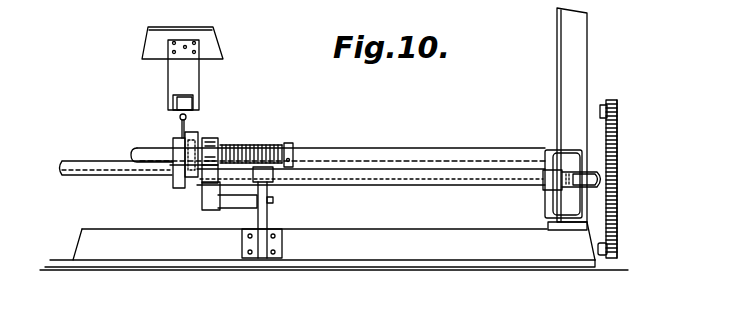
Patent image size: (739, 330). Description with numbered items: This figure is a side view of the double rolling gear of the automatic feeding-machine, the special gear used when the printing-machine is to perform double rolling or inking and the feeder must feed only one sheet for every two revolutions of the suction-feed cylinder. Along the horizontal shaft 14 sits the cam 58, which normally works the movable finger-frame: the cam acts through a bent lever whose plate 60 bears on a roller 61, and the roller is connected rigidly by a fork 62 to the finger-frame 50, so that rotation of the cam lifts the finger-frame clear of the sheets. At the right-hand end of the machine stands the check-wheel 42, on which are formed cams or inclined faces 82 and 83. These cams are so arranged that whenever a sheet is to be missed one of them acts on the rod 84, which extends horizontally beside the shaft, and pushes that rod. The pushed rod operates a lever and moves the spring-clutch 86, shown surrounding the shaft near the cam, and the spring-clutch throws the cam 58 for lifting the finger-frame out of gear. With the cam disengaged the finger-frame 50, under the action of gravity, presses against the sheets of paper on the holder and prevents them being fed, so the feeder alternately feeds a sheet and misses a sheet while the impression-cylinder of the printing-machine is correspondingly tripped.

The shaft 14 is at (447, 158).
The check-wheel 42 is at (617, 228).
The finger-frame 50 is at (208, 47).
The cam 58 is at (190, 152).
The plate 60 is at (178, 117).
The roller 61 is at (193, 107).
The fork 62 is at (187, 77).
The cam or inclined face 82 is at (602, 110).
The cam or inclined face 83 is at (603, 256).
The rod 84 is at (475, 181).
The spring-clutch 86 is at (220, 141).